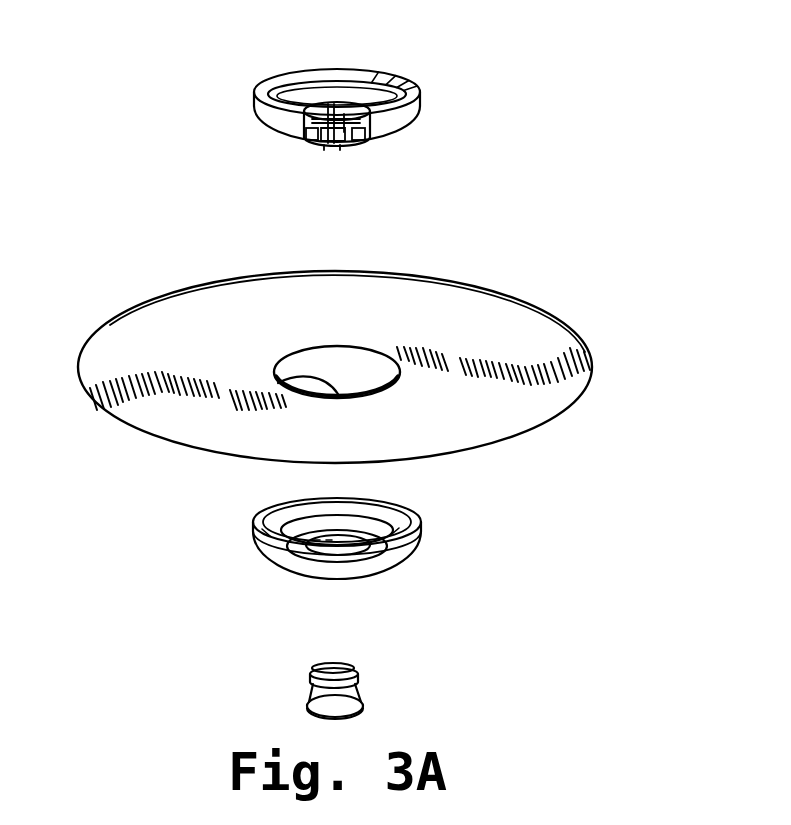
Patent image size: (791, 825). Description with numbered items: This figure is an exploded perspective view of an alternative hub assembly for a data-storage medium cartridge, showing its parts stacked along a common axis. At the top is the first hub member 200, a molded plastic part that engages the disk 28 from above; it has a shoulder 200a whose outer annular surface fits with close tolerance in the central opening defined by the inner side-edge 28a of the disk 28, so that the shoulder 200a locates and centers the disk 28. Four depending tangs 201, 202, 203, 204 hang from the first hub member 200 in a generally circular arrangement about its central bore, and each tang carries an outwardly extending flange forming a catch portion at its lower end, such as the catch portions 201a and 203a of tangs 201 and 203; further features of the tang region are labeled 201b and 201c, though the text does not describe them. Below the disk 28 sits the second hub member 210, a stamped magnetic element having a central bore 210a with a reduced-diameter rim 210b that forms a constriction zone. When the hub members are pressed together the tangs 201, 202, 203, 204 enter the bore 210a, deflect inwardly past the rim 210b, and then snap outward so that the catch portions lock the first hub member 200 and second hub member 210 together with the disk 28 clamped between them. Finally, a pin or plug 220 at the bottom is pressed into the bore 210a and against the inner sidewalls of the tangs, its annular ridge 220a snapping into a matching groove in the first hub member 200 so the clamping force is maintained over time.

The first hub member 200 is at (538, 27).
The shoulder 200a is at (263, 118).
The tang 201 is at (305, 122).
The catch portion 201a is at (308, 128).
The hub slot 201b is at (333, 147).
The hub slot 201c is at (340, 103).
The tang 202 is at (331, 148).
The tang 203 is at (350, 112).
The catch portion 203a is at (357, 113).
The tang 204 is at (362, 145).
The disk 28 is at (560, 397).
The inner side-edge 28a is at (276, 382).
The second hub member 210 is at (508, 502).
The central bore 210a is at (342, 565).
The reduced-diameter rim 210b is at (343, 543).
The pin or plug 220 is at (421, 670).
The annular ridge 220a is at (357, 680).